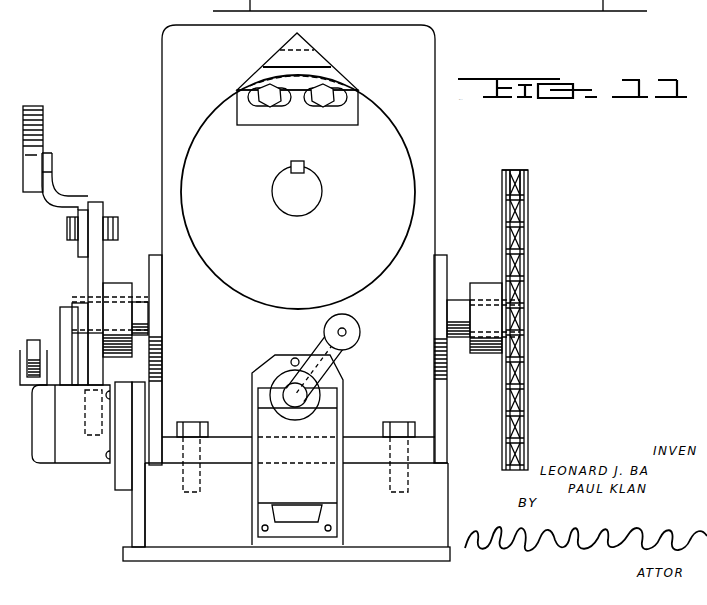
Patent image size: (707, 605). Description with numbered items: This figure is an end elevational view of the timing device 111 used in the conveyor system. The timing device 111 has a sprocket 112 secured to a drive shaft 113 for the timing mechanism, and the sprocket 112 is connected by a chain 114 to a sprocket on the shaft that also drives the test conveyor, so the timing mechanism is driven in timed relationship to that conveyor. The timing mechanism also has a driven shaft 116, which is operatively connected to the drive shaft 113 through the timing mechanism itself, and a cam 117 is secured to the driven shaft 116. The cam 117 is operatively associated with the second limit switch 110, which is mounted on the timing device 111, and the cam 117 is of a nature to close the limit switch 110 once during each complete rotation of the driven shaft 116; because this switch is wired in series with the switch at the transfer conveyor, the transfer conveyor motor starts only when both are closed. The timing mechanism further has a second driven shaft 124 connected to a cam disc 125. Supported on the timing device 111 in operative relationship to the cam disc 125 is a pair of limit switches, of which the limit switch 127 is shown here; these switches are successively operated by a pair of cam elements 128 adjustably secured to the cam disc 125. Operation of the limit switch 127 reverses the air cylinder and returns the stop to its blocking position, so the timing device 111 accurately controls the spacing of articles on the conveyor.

The second limit switch 110 is at (252, 373).
The timing device 111 is at (440, 159).
The sprocket 112 is at (532, 218).
The drive shaft 113 is at (453, 310).
The chain 114 is at (517, 168).
The driven shaft 116 is at (313, 193).
The cam 117 is at (385, 125).
The second driven shaft 124 is at (150, 317).
The cam disc 125 is at (94, 265).
The limit switch 127 is at (87, 455).
The cam elements 128 is at (35, 138).